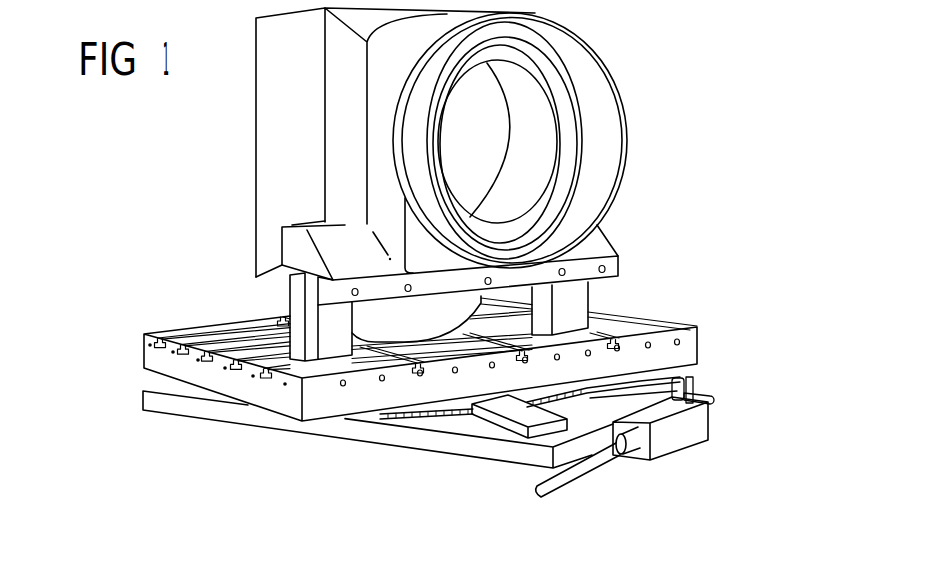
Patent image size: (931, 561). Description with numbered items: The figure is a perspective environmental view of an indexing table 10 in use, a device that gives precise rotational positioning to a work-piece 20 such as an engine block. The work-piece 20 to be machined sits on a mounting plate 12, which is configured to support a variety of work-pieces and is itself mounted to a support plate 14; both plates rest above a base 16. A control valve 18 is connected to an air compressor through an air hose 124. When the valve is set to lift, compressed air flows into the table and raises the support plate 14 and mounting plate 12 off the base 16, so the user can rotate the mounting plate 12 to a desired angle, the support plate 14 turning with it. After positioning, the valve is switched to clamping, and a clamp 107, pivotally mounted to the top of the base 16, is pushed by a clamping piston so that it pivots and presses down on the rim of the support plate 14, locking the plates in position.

The indexing table 10 is at (720, 258).
The mounting plate 12 is at (125, 345).
The support plate 14 is at (587, 393).
The base 16 is at (155, 414).
The control valve 18 is at (700, 440).
The work-piece 20 is at (277, 148).
The clamp 107 is at (525, 416).
The air hose 124 is at (580, 477).